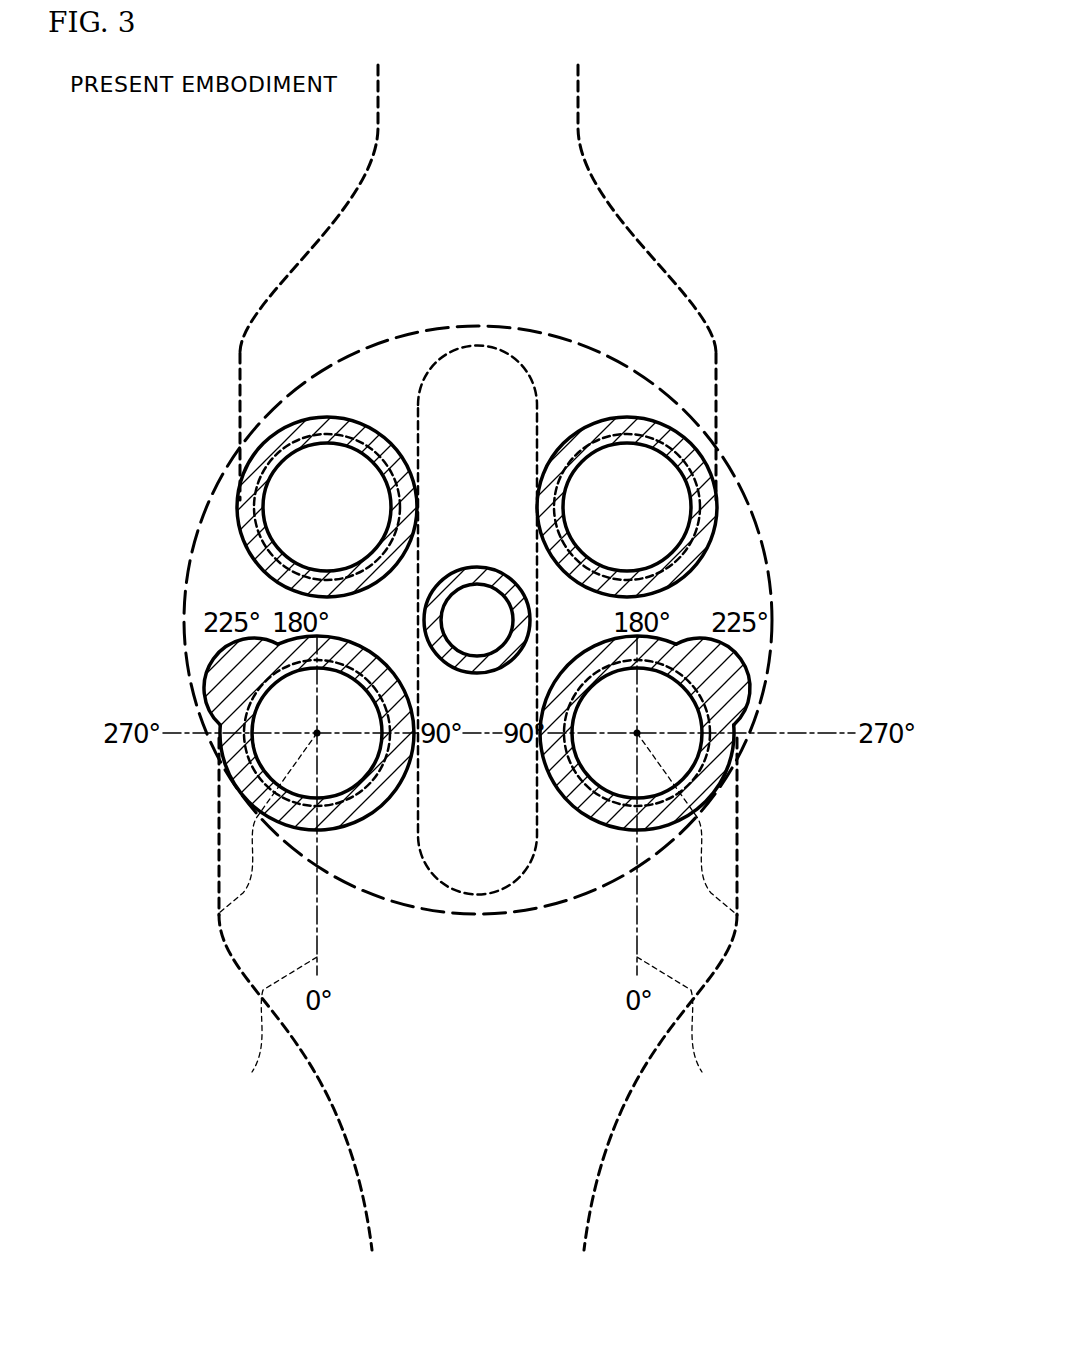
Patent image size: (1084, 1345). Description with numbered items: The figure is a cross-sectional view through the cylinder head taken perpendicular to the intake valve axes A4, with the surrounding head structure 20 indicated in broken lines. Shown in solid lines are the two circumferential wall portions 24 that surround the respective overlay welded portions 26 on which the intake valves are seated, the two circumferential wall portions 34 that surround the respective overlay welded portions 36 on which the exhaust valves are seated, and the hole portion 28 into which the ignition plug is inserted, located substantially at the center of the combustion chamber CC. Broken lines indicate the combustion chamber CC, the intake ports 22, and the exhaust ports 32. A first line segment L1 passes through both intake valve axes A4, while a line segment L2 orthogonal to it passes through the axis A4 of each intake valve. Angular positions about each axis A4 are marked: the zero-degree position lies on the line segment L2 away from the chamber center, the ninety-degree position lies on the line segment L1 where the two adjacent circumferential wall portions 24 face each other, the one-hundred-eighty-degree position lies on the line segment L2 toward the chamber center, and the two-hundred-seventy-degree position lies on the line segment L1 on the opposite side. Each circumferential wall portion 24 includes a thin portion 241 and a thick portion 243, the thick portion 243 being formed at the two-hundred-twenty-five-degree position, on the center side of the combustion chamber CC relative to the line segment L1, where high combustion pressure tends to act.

The housing / body 20 is at (483, 657).
The intake port 22 is at (219, 855).
The circumferential wall portion 24 is at (481, 733).
The thin portion 241 is at (560, 776).
The thick portion 243 is at (205, 662).
The overlay welded portion 26 is at (337, 676).
The hole portion 28 is at (475, 567).
The exhaust port 32 is at (240, 405).
The circumferential wall portion 34 is at (477, 507).
The overlay welded portion 36 is at (313, 436).
The combustion chamber CC is at (772, 570).
The line segment L1 is at (862, 733).
The line segment L2 is at (476, 1030).
The axis A4 is at (219, 913).